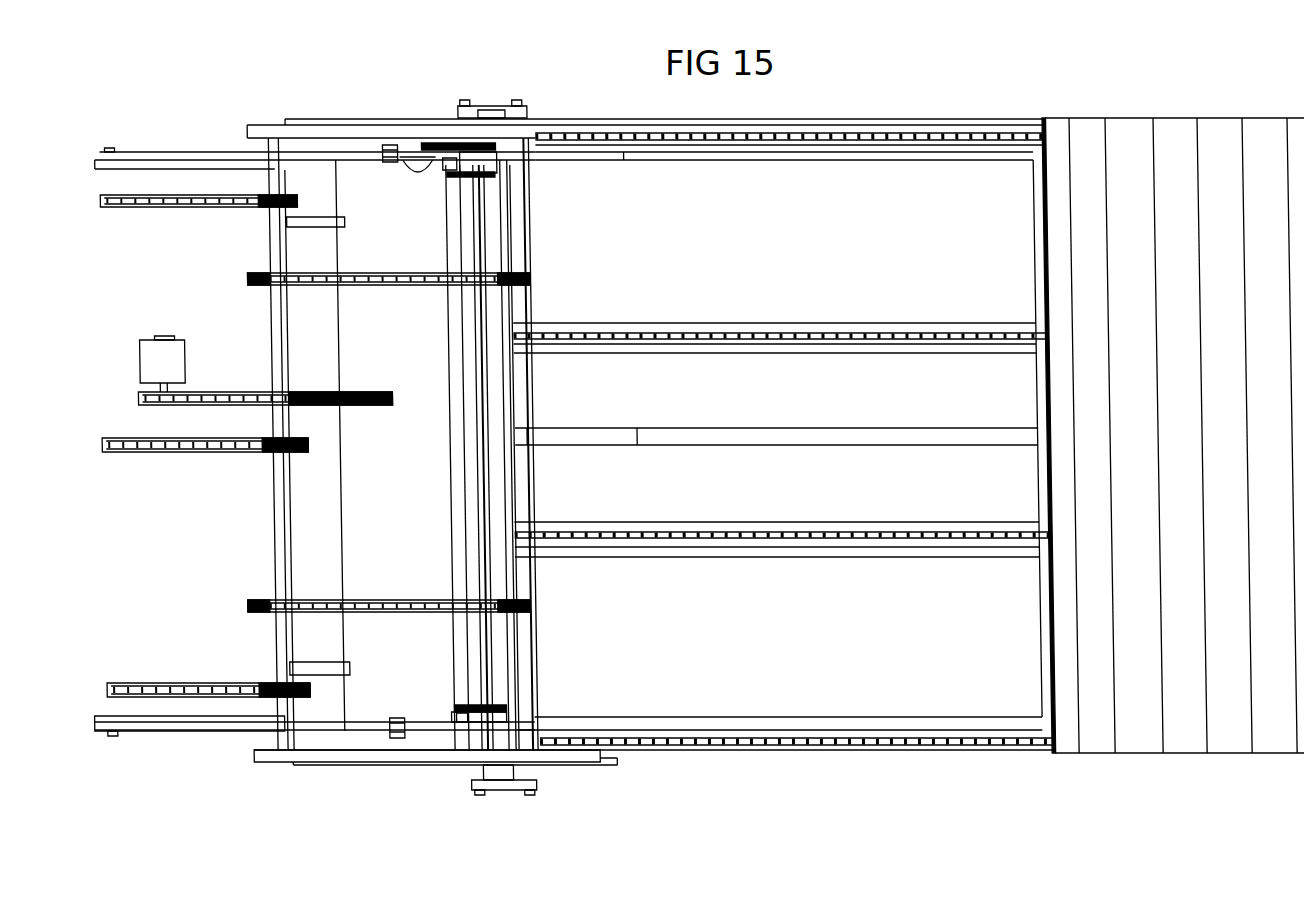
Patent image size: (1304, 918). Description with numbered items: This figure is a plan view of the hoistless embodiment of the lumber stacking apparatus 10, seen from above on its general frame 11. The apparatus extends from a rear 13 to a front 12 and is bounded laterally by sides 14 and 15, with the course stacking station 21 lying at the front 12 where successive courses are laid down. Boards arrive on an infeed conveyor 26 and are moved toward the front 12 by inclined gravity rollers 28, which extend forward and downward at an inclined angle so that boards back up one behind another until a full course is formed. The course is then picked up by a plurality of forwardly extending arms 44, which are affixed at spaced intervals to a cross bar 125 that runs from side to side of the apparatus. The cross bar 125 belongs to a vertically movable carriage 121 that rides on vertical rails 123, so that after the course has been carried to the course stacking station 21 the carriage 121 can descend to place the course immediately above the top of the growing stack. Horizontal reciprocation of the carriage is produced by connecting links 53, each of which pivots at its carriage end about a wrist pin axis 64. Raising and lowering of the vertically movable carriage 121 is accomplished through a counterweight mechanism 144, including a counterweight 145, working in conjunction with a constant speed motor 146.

The lumber stacking apparatus 10 is at (722, 118).
The general frame 11 is at (283, 767).
The front 12 is at (1050, 413).
The rear 13 is at (254, 755).
The side 14 is at (818, 752).
The side 15 is at (878, 119).
The course stacking station 21 is at (1125, 116).
The infeed conveyor 26 is at (133, 207).
The inclined gravity rollers 28 is at (796, 133).
The forwardly extending arms 44 is at (786, 157).
The connecting link 53 is at (317, 158).
The wrist pin axis 64 is at (392, 163).
The vertically movable carriage 121 is at (535, 472).
The vertical rails 123 is at (487, 104).
The cross bar 125 is at (520, 236).
The counterweight mechanism 144 is at (447, 341).
The counterweight 145 is at (447, 224).
The constant speed motor 146 is at (413, 165).